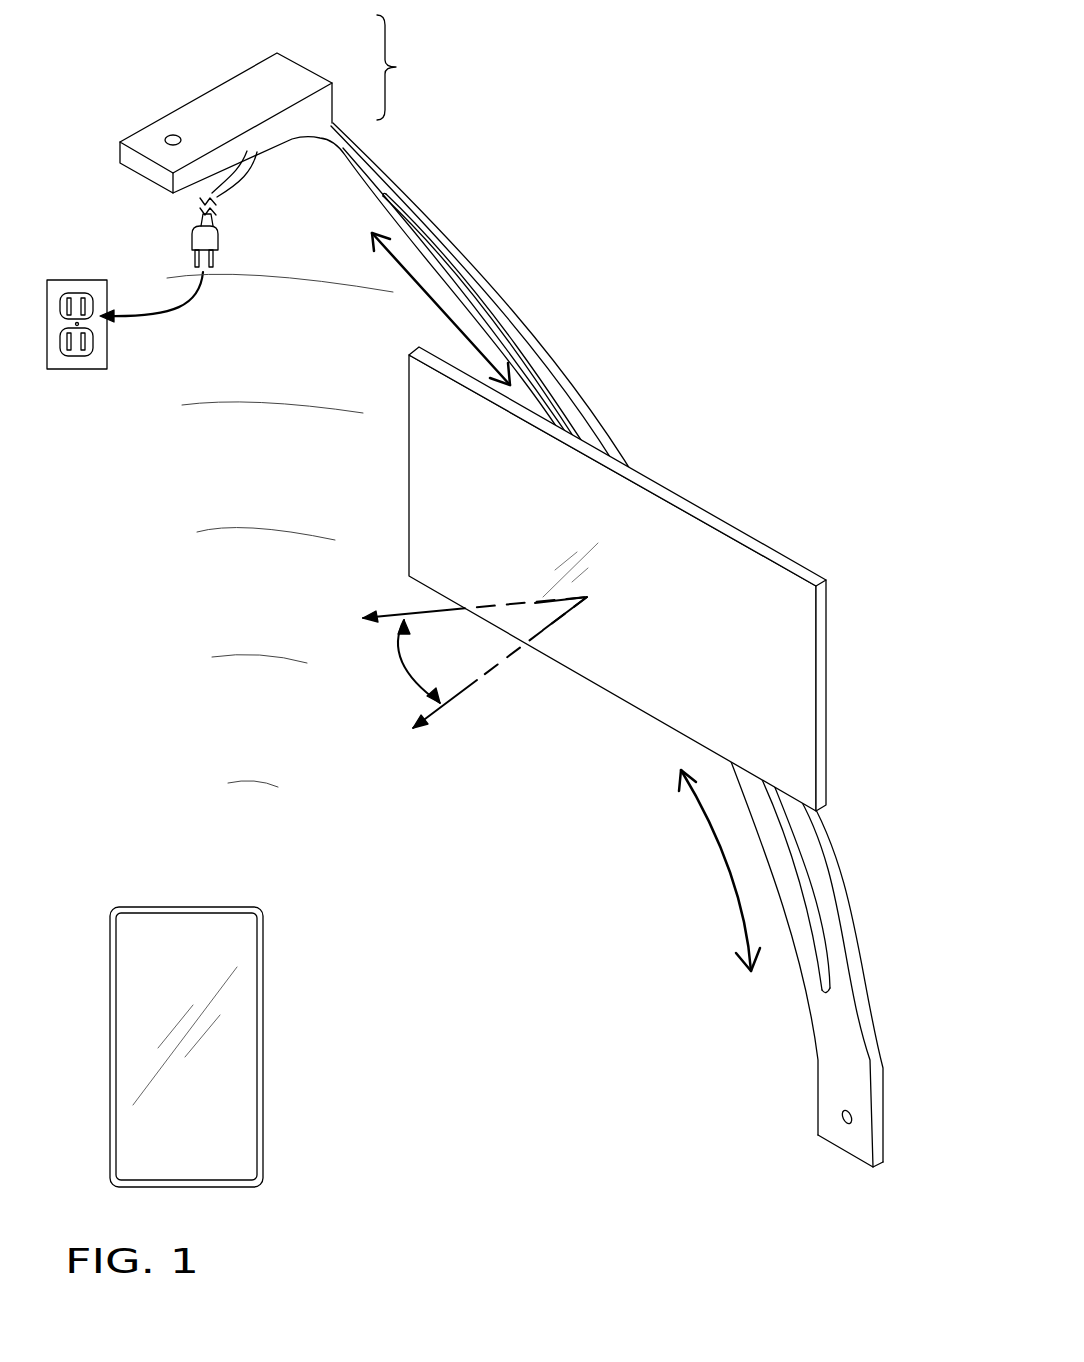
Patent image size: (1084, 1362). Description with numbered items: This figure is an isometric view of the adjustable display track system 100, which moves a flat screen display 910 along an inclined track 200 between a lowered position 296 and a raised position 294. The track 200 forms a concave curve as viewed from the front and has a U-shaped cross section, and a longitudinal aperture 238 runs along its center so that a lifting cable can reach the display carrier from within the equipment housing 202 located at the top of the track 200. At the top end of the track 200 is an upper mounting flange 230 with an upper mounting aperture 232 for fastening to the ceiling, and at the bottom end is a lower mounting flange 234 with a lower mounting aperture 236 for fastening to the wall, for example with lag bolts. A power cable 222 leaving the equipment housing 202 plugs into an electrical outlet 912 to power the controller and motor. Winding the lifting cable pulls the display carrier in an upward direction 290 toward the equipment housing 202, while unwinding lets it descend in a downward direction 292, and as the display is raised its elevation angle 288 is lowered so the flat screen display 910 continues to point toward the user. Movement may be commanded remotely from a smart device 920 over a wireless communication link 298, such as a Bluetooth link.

The adjustable display track system 100 is at (708, 320).
The track 200 is at (848, 939).
The equipment housing 202 is at (419, 67).
The power cable 222 is at (235, 175).
The upper mounting flange 230 is at (145, 165).
The upper mounting aperture 232 is at (168, 136).
The lower mounting flange 234 is at (818, 1087).
The lower mounting aperture 236 is at (845, 1123).
The longitudinal aperture 238 is at (824, 978).
The elevation angle 288 is at (475, 662).
The upward direction 290 is at (680, 863).
The downward direction 292 is at (701, 979).
The raised position 294 is at (522, 254).
The lowered position 296 is at (892, 1041).
The wireless communication link 298 is at (233, 531).
The flat screen display 910 is at (765, 590).
The electrical outlet 912 is at (75, 372).
The smart device 920 is at (263, 1053).